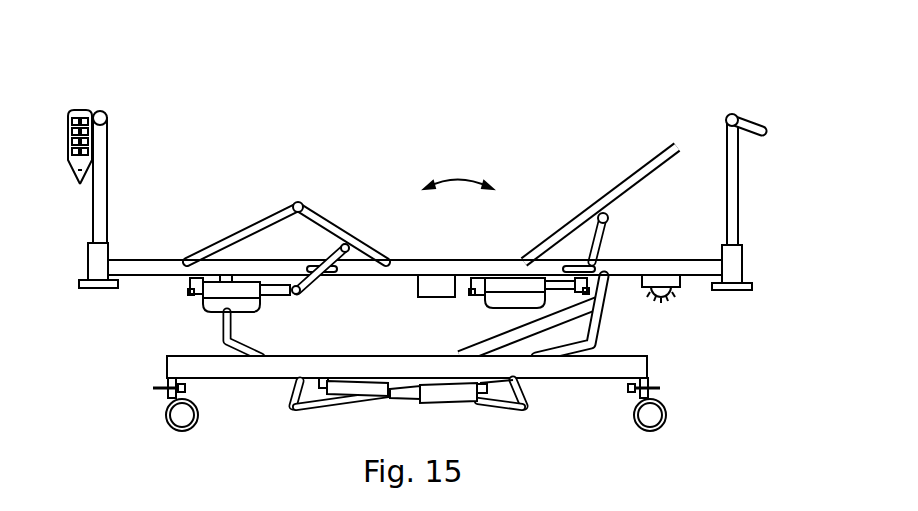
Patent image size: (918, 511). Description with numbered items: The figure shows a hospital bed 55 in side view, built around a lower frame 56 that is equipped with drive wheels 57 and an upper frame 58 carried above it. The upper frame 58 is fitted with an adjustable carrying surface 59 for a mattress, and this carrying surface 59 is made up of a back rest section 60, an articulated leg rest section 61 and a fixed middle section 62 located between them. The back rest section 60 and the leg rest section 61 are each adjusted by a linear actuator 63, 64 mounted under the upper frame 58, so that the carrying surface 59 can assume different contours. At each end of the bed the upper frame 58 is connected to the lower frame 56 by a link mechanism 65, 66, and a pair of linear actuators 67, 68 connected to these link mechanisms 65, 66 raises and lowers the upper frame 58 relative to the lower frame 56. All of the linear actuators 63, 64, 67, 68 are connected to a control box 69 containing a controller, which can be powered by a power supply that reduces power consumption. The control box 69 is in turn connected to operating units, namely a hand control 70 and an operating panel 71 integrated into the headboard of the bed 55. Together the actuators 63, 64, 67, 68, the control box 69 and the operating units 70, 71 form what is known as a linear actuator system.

The hospital bed 55 is at (286, 111).
The lower frame 56 is at (588, 372).
The drive wheels 57 is at (167, 428).
The upper frame 58 is at (633, 265).
The adjustable carrying surface 59 is at (458, 176).
The back rest section 60 is at (593, 208).
The articulated leg rest section 61 is at (303, 203).
The fixed middle section 62 is at (437, 268).
The linear actuator 63 is at (523, 302).
The linear actuator 64 is at (261, 304).
The link mechanism 65 is at (600, 337).
The link mechanism 66 is at (222, 330).
The linear actuator 67 is at (424, 402).
The linear actuator 68 is at (348, 385).
The control box 69 is at (443, 294).
The hand control 70 is at (80, 108).
The operating panel 71 is at (752, 120).